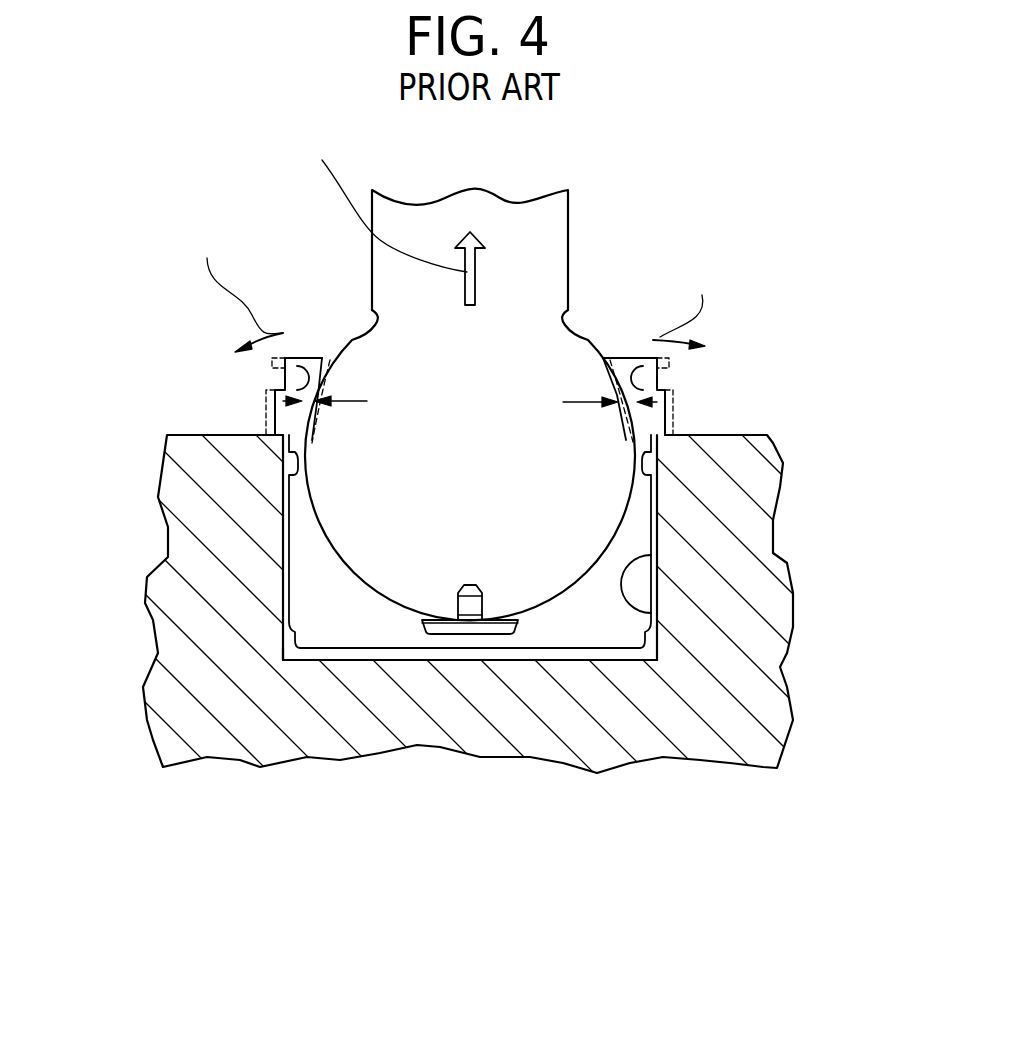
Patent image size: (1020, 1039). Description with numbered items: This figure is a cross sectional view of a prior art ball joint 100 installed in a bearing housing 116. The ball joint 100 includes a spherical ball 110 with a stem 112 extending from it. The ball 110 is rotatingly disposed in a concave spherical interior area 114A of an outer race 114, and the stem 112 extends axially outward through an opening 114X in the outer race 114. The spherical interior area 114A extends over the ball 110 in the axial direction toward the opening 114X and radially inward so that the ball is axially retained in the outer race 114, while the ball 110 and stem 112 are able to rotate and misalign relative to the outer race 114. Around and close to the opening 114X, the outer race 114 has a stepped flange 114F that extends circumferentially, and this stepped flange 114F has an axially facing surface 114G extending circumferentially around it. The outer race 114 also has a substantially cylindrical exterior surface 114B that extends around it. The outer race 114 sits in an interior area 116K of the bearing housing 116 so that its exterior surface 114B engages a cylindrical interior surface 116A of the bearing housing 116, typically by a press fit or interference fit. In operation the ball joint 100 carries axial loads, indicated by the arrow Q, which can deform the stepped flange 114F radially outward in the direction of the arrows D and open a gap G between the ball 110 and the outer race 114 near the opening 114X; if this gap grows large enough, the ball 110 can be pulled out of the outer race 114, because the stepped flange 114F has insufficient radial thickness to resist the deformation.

The ball joint 100 is at (137, 253).
The spherical ball 110 is at (513, 387).
The stem 112 is at (540, 217).
The outer race 114 is at (320, 593).
The concave spherical interior area 114A is at (612, 541).
The cylindrical exterior surface 114B is at (283, 536).
The stepped flange 114F is at (283, 410).
The axially facing surface 114G is at (660, 440).
The opening 114X is at (603, 354).
The bearing housing 116 is at (743, 572).
The cylindrical interior surface 116A is at (653, 617).
The interior area 116K is at (291, 652).